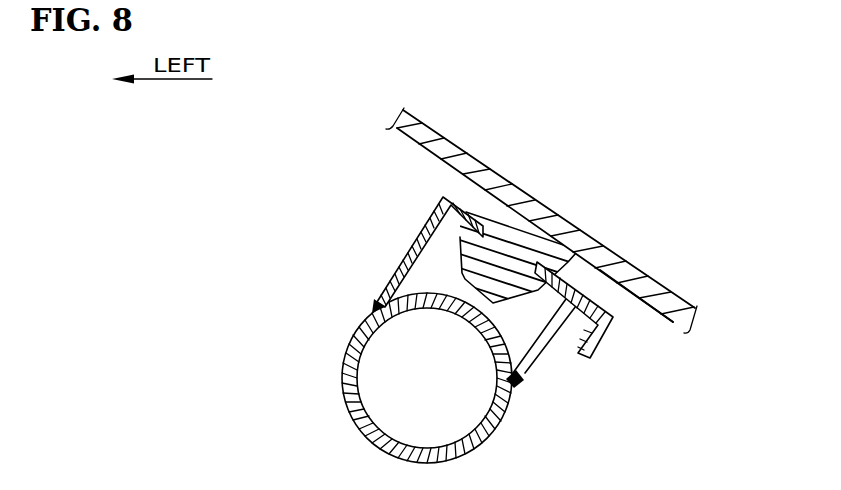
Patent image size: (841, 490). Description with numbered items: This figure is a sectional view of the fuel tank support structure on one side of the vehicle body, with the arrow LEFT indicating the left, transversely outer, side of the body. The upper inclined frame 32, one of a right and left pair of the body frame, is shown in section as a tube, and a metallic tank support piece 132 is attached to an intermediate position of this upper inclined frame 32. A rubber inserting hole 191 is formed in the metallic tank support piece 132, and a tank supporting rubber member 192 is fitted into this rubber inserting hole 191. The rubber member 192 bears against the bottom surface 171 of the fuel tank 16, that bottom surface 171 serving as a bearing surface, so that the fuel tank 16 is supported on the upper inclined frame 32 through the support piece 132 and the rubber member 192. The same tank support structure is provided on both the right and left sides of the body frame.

The fuel tank 16 is at (672, 331).
The upper inclined frame 32 is at (345, 371).
The metallic tank support piece 132 is at (428, 222).
The bottom surface 171 is at (649, 304).
The rubber inserting hole 191 is at (528, 258).
The tank supporting rubber member 192 is at (527, 233).